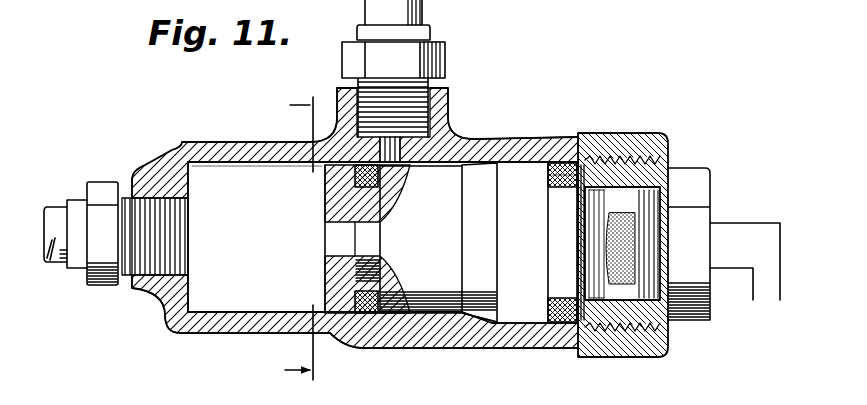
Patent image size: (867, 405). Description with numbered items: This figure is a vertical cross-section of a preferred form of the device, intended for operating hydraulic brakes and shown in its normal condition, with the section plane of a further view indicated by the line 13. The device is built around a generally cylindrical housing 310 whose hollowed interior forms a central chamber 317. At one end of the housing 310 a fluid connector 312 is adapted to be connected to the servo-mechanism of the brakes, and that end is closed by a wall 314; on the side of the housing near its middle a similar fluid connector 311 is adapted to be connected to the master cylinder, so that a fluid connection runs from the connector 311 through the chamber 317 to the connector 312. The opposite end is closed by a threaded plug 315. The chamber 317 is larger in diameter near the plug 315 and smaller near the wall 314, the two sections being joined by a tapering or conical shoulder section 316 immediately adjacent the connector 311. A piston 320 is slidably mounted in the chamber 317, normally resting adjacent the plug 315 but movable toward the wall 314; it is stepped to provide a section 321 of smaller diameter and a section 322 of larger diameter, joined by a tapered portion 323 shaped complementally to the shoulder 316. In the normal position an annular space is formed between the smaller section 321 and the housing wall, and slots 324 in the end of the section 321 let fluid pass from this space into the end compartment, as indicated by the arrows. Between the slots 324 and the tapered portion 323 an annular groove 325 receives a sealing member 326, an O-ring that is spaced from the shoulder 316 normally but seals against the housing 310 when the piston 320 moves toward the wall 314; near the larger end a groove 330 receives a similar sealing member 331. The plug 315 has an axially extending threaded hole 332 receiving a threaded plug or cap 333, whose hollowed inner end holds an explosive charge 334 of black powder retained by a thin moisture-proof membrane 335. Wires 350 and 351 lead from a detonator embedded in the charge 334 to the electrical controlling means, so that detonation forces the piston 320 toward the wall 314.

The section line 13- 13 is at (295, 240).
The housing 310 is at (257, 148).
The fluid connector 311 is at (447, 62).
The fluid connector 312 is at (100, 286).
The wall 314 is at (165, 182).
The threaded plug 315 is at (652, 133).
The shoulder section 316 is at (367, 316).
The central chamber 317 is at (228, 246).
The piston 320 is at (482, 176).
The section of smaller diameter 321 is at (452, 262).
The section of larger diameter 322 is at (512, 277).
The tapered portion 323 is at (488, 210).
The slots 324 is at (318, 190).
The annular groove 325 is at (365, 246).
The sealing member 326 is at (393, 186).
The groove 330 is at (560, 215).
The sealing member 331 is at (572, 158).
The threaded hole 332 is at (592, 318).
The plug or cap 333 is at (706, 195).
The explosive charge 334 is at (632, 222).
The moisture-proof membrane 335 is at (600, 238).
The wire 350 is at (772, 222).
The wire 351 is at (745, 267).